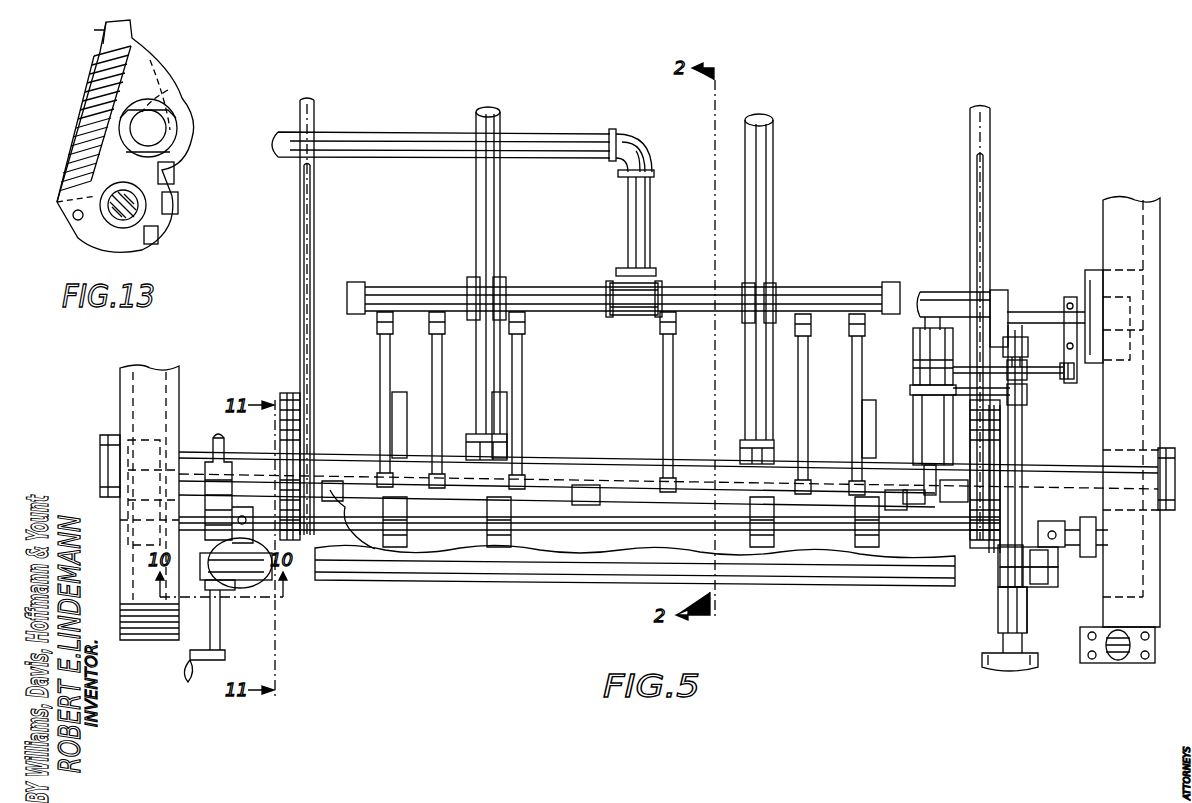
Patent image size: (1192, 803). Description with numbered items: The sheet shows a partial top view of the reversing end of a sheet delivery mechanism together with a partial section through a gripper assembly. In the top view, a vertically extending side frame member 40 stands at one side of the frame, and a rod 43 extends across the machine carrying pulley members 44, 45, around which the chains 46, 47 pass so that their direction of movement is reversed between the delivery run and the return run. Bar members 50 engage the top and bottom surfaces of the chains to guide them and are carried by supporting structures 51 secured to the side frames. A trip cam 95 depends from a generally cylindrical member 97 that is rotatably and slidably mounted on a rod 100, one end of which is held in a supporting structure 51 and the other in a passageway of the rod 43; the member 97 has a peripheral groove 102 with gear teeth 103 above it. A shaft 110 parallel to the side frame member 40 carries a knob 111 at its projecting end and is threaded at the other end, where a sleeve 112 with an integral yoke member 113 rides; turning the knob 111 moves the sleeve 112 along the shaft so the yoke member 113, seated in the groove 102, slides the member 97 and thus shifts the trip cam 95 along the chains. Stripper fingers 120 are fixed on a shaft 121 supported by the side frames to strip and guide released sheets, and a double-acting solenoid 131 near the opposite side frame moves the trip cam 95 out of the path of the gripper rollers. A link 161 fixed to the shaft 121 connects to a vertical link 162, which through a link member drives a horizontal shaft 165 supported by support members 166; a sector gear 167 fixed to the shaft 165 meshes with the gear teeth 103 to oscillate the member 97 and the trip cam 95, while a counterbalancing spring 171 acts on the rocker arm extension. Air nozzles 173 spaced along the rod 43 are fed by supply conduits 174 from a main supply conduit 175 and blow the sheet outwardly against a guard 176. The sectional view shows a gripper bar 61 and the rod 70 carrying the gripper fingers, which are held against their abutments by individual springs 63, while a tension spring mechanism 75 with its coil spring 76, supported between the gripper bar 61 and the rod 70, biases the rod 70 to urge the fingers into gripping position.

In FIG. 13, the tension spring mechanism 75 is at (88, 63).
In FIG. 13, the coil spring 76 is at (90, 110).
In FIG. 13, the gripper bar 61 is at (180, 135).
In FIG. 13, the rod 70 is at (130, 226).
In FIG. 5, the side frame member 40 is at (1152, 206).
In FIG. 5, the rod 43 is at (590, 458).
In FIG. 5, the pulley member 44 is at (998, 426).
In FIG. 5, the pulley member 45 is at (282, 396).
In FIG. 5, the chain 46 is at (968, 152).
In FIG. 5, the chain 47 is at (318, 186).
In FIG. 5, the bar member 50 is at (308, 200).
In FIG. 5, the supporting structure 51 is at (1045, 312).
In FIG. 5, the spring 63 is at (1030, 588).
In FIG. 5, the trip cam 95 is at (930, 505).
In FIG. 5, the cylindrical member 97 is at (912, 422).
In FIG. 5, the rod 100 is at (924, 470).
In FIG. 5, the peripheral groove 102 is at (910, 389).
In FIG. 5, the gear teeth 103 is at (912, 366).
In FIG. 5, the shaft 110 is at (1022, 450).
In FIG. 5, the knob 111 is at (1010, 666).
In FIG. 5, the sleeve 112 is at (1028, 392).
In FIG. 5, the yoke member 113 is at (1026, 406).
In FIG. 5, the stripper finger 120 is at (408, 388).
In FIG. 5, the shaft 121 is at (612, 532).
In FIG. 5, the double-acting solenoid 131 is at (262, 595).
In FIG. 5, the link 161 is at (1058, 560).
In FIG. 5, the link 162 is at (1058, 579).
In FIG. 5, the shaft 165 is at (1022, 530).
In FIG. 5, the support member 166 is at (1020, 352).
In FIG. 5, the sector gear 167 is at (912, 346).
In FIG. 5, the counterbalancing spring 171 is at (1058, 380).
In FIG. 5, the air nozzle 173 is at (560, 498).
In FIG. 5, the supply conduit 174 is at (432, 334).
In FIG. 5, the main supply conduit 175 is at (626, 218).
In FIG. 5, the guard 176 is at (458, 584).